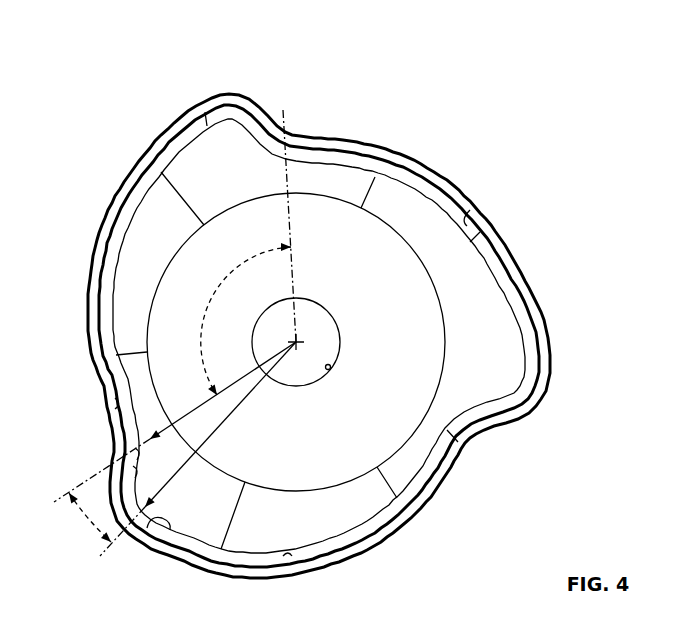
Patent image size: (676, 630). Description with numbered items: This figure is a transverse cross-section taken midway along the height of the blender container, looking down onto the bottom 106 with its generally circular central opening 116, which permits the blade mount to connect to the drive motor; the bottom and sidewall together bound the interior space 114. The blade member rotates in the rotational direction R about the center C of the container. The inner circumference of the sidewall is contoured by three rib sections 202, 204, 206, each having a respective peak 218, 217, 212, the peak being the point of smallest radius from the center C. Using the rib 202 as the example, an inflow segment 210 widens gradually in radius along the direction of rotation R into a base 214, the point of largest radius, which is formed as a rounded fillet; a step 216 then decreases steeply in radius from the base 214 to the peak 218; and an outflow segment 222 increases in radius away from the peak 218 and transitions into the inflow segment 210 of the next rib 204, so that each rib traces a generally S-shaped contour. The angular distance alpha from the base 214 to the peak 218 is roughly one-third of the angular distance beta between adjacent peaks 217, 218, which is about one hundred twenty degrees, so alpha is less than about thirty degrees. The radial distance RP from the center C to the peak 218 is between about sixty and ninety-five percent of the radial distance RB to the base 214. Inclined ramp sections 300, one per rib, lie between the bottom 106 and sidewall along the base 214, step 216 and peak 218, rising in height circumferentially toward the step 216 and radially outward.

The rib section 204 is at (245, 80).
The rib section 206 is at (560, 398).
The inclined ramp section 300 is at (198, 166).
The peak 217 is at (265, 140).
The interior space 114 is at (470, 210).
The bottom 106 is at (326, 283).
The central opening 116 is at (333, 366).
The center C is at (302, 338).
The rotational direction R is at (312, 376).
The radial distance to rib peak RP is at (175, 422).
The radial distance to rib base RB is at (198, 449).
The angular distance from rib base to rib peak alpha is at (90, 517).
The angular distance between adjacent rib peaks beta is at (242, 319).
The peak 212 is at (480, 420).
The outflow segment 222 is at (115, 398).
The peak 218 is at (137, 460).
The step 216 is at (135, 478).
The rib section 202 is at (124, 556).
The base 214 is at (160, 523).
The inflow segment 210 is at (283, 556).